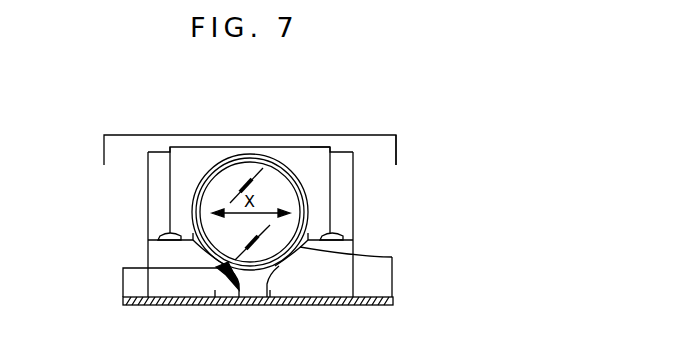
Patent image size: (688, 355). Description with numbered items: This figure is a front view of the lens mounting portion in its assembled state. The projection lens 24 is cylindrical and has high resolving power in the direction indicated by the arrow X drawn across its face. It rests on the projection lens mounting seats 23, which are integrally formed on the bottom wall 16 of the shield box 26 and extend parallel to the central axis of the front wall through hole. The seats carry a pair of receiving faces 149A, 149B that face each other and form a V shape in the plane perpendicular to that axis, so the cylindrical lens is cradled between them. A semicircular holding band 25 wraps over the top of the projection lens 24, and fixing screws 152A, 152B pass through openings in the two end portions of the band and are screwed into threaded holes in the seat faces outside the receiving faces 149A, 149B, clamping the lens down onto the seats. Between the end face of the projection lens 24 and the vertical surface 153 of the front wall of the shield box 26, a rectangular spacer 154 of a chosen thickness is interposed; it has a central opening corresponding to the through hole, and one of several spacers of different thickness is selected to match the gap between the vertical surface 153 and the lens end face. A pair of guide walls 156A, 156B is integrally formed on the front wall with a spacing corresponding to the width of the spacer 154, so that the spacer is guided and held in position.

The bottom wall 16 is at (320, 306).
The projection lens mounting seat 23 is at (254, 308).
The projection lens 24 is at (271, 161).
The holding band 25 is at (233, 153).
The shield box 26 is at (133, 135).
The receiving face 149A is at (123, 268).
The receiving face 149B is at (392, 257).
The fixing screw 152A is at (172, 233).
The fixing screw 152B is at (338, 231).
The vertical surface 153 is at (378, 150).
The spacer 154 is at (317, 155).
The guide wall 156A is at (157, 168).
The guide wall 156B is at (347, 180).